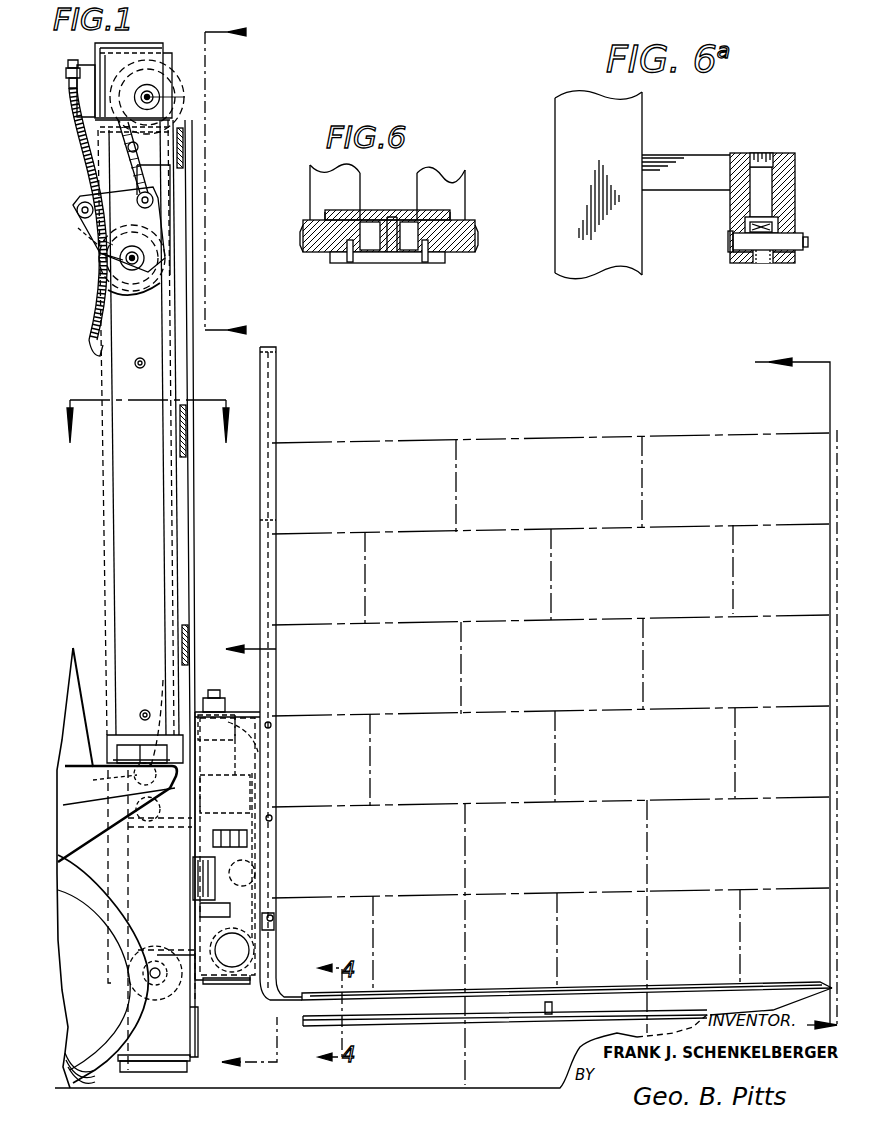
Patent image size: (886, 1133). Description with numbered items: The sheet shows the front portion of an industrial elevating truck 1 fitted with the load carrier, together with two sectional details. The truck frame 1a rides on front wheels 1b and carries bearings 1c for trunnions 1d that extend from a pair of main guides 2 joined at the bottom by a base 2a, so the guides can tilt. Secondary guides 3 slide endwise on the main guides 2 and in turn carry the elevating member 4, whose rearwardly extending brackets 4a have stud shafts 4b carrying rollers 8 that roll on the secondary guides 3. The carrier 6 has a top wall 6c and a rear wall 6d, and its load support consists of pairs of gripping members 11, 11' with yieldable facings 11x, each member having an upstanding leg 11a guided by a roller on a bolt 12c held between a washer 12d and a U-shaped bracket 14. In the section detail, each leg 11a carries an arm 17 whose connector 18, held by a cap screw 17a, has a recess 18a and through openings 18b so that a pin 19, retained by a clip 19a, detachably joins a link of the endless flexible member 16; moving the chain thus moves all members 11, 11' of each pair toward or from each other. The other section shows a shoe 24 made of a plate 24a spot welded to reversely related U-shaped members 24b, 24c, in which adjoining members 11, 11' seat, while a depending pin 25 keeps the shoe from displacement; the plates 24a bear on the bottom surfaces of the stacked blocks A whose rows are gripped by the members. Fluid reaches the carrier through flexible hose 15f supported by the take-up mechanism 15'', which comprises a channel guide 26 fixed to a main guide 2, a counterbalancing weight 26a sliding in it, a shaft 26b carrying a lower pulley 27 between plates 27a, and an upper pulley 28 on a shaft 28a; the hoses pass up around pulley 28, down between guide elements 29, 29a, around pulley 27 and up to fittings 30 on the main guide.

In FIG. 1, the front portion of industrial elevating truck 1 is at (217, 1059).
In FIG. 1, the frame 1a is at (168, 423).
In FIG. 1, the front wheels 1b is at (77, 1103).
In FIG. 1, the bearings 1c is at (115, 792).
In FIG. 1, the trunnions 1d is at (154, 722).
In FIG. 1, the main guides 2 is at (137, 1057).
In FIG. 1, the base 2a is at (178, 1067).
In FIG. 1, the secondary guides 3 is at (240, 862).
In FIG. 1, the elevating member 4 is at (153, 933).
In FIG. 1, the brackets 4a is at (140, 955).
In FIG. 1, the stud shafts 4b is at (150, 920).
In FIG. 1, the carrier 6 is at (235, 1028).
In FIG. 1, the top wall 6c is at (266, 773).
In FIG. 1, the rear wall 6d is at (268, 794).
In FIG. 1, the rollers 8 is at (160, 947).
In FIG. 1, the load engaging member 11 is at (567, 1024).
In FIG. 6, the load engaging member 11 is at (403, 247).
In FIG. 1, the upstanding leg 11a is at (280, 978).
In FIG. 6, the upstanding leg 11a is at (450, 183).
In FIG. 6A, the upstanding leg 11a is at (578, 272).
In FIG. 6, the facings 11x is at (477, 228).
In FIG. 6, the companion load engaging member 11' is at (299, 252).
In FIG. 1, the bolt 12c is at (217, 745).
In FIG. 1, the washer 12d is at (262, 696).
In FIG. 1, the U-shaped bracket 14 is at (272, 750).
In FIG. 1, the flexible hose 15f is at (183, 136).
In FIG. 1, the hose supporting mechanism 15'' is at (81, 253).
In FIG. 6A, the flexible member 16 is at (756, 264).
In FIG. 6A, the arm 17 is at (673, 167).
In FIG. 6A, the cap screw 17a is at (758, 153).
In FIG. 6A, the connector 18 is at (790, 195).
In FIG. 6A, the recess 18a is at (785, 214).
In FIG. 6A, the through openings 18b is at (733, 256).
In FIG. 6A, the pin 19 is at (728, 247).
In FIG. 6A, the clip 19a is at (802, 252).
In FIG. 1, the shoes 24 is at (449, 1000).
In FIG. 6, the shoes 24 is at (400, 201).
In FIG. 6, the plate 24a is at (447, 208).
In FIG. 6, the U-shaped member 24b is at (323, 212).
In FIG. 6, the U-shaped member 24c is at (452, 218).
In FIG. 1, the depending pin 25 is at (550, 1005).
In FIG. 1, the elongated guide 26 is at (182, 495).
In FIG. 1, the weight 26a is at (148, 182).
In FIG. 1, the shaft 26b is at (123, 260).
In FIG. 1, the pulley 27 is at (133, 296).
In FIG. 1, the plates 27a is at (90, 236).
In FIG. 1, the pulley 28 is at (180, 103).
In FIG. 1, the shaft 28a is at (150, 96).
In FIG. 1, the guide element 29 is at (82, 201).
In FIG. 1, the guide element 29a is at (153, 187).
In FIG. 1, the fittings 30 is at (68, 100).
In FIG. 1, the blocks A is at (588, 440).